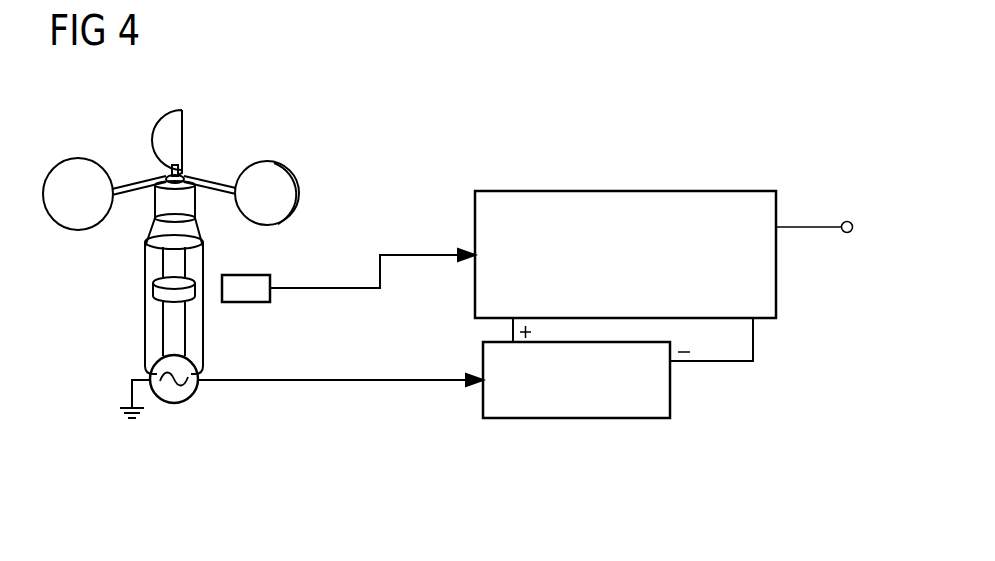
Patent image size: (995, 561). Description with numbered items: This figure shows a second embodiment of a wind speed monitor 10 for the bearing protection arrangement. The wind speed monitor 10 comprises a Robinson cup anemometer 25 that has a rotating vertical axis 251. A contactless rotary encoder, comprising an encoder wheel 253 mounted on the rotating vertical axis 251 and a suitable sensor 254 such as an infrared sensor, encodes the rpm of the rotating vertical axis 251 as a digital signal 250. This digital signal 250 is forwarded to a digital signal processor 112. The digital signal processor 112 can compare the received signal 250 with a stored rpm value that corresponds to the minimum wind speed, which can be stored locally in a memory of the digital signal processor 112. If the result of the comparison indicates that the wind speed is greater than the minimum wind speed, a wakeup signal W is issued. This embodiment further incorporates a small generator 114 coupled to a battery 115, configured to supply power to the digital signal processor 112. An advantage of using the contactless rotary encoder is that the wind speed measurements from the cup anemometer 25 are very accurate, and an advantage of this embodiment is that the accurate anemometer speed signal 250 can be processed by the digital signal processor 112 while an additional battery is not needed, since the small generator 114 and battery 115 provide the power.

The wind speed monitor 10 is at (693, 127).
The Robinson cup anemometer 25 is at (217, 183).
The rotating vertical axis 251 is at (173, 261).
The encoder wheel 253 is at (154, 289).
The sensor 254 is at (243, 302).
The digital signal 250 is at (357, 290).
The digital signal processor 112 is at (623, 190).
The battery 115 is at (577, 418).
The small generator 114 is at (175, 403).
The wakeup signal W is at (847, 233).